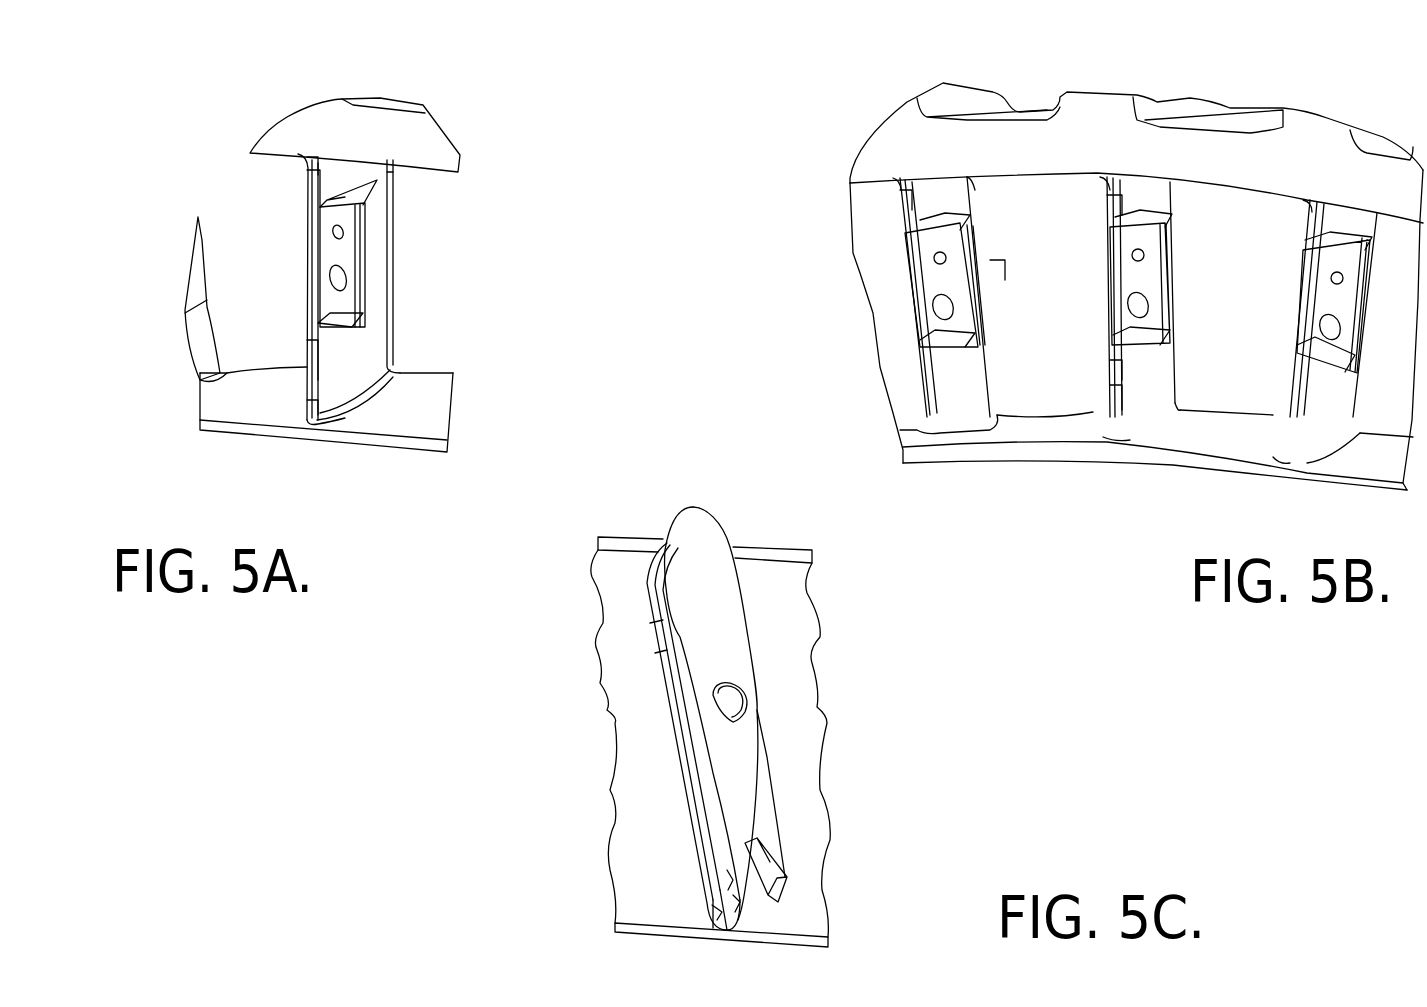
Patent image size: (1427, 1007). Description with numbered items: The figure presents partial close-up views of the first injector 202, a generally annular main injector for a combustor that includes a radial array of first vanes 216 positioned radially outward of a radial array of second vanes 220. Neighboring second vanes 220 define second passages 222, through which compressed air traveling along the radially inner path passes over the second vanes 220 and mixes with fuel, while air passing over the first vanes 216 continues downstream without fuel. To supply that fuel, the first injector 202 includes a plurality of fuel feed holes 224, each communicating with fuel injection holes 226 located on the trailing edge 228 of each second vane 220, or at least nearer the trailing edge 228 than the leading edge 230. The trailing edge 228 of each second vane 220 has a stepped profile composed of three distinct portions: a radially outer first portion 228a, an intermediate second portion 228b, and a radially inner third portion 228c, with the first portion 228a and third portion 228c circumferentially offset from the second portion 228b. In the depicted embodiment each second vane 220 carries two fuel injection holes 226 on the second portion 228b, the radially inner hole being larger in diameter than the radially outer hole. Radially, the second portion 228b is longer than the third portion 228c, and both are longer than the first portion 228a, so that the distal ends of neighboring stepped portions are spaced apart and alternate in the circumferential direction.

In FIG. 5A, the first injector 202 is at (287, 107).
In FIG. 5B, the first injector 202 is at (990, 75).
In FIG. 5C, the first injector 202 is at (653, 518).
In FIG. 5B, the first vanes 216 is at (1313, 130).
In FIG. 5A, the second vanes 220 is at (327, 185).
In FIG. 5B, the second vanes 220 is at (907, 193).
In FIG. 5C, the second vanes 220 is at (692, 690).
In FIG. 5A, the second passages 222 is at (263, 320).
In FIG. 5B, the second passages 222 is at (1033, 267).
In FIG. 5C, the fuel feed holes 224 is at (730, 707).
In FIG. 5A, the fuel injection holes 226 is at (343, 285).
In FIG. 5B, the fuel injection holes 226 is at (1130, 257).
In FIG. 5A, the trailing edge 228 is at (312, 360).
In FIG. 5B, the trailing edge 228 is at (1113, 368).
In FIG. 5C, the trailing edge 228 is at (737, 902).
In FIG. 5A, the first portion 228a is at (307, 175).
In FIG. 5B, the first portion 228a is at (1117, 200).
In FIG. 5C, the first portion 228a is at (733, 880).
In FIG. 5A, the second portion 228b is at (363, 300).
In FIG. 5B, the second portion 228b is at (1167, 290).
In FIG. 5C, the second portion 228b is at (787, 880).
In FIG. 5A, the third portion 228c is at (307, 383).
In FIG. 5B, the third portion 228c is at (1113, 392).
In FIG. 5C, the third portion 228c is at (720, 912).
In FIG. 5C, the leading edge 230 is at (700, 508).